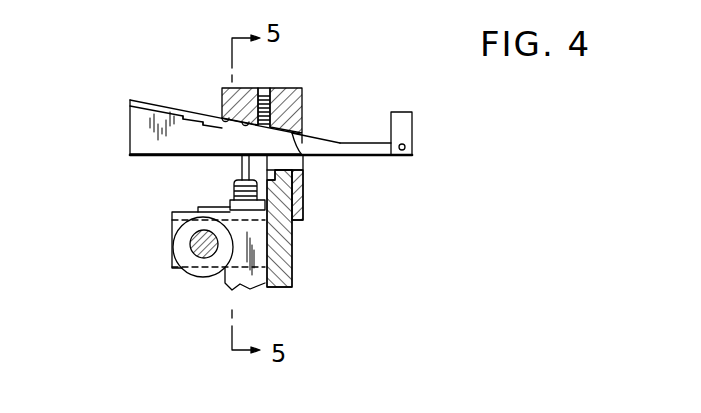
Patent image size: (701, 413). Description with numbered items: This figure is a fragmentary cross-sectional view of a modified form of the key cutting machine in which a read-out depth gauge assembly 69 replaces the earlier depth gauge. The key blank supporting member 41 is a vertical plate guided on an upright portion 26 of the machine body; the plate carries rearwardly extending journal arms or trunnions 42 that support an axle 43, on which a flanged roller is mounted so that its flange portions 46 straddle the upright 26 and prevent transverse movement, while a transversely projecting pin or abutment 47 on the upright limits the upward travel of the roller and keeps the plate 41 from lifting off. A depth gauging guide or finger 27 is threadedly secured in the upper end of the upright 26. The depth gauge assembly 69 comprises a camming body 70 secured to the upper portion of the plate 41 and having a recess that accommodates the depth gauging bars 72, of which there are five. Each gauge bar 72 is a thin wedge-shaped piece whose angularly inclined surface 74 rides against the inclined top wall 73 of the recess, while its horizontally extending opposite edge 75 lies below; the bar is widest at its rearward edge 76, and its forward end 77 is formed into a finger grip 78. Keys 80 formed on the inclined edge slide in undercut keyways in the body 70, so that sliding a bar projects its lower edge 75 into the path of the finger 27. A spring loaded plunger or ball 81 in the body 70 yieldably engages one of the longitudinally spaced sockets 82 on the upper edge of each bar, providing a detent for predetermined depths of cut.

The upright portion 26 is at (245, 285).
The depth gauging guide or finger 27 is at (243, 166).
The key blank supporting member 41 is at (290, 257).
The journal arms or trunnions 42 is at (172, 225).
The axle 43 is at (200, 257).
The flange portions 46 is at (178, 248).
The transversely projecting pin or abutment 47 is at (196, 208).
The read-out depth gauge assembly 69 is at (305, 207).
The camming body 70 is at (297, 62).
The depth gauging bars 72 is at (208, 143).
The top wall 73 is at (300, 157).
The angularly inclined surface 74 is at (148, 100).
The horizontally extending opposite edge 75 is at (153, 157).
The rearward edge 76 is at (130, 123).
The forward end 77 is at (413, 146).
The finger grip 78 is at (405, 118).
The keys 80 is at (310, 137).
The spring loaded plunger or ball 81 is at (265, 121).
The sockets 82 is at (184, 113).